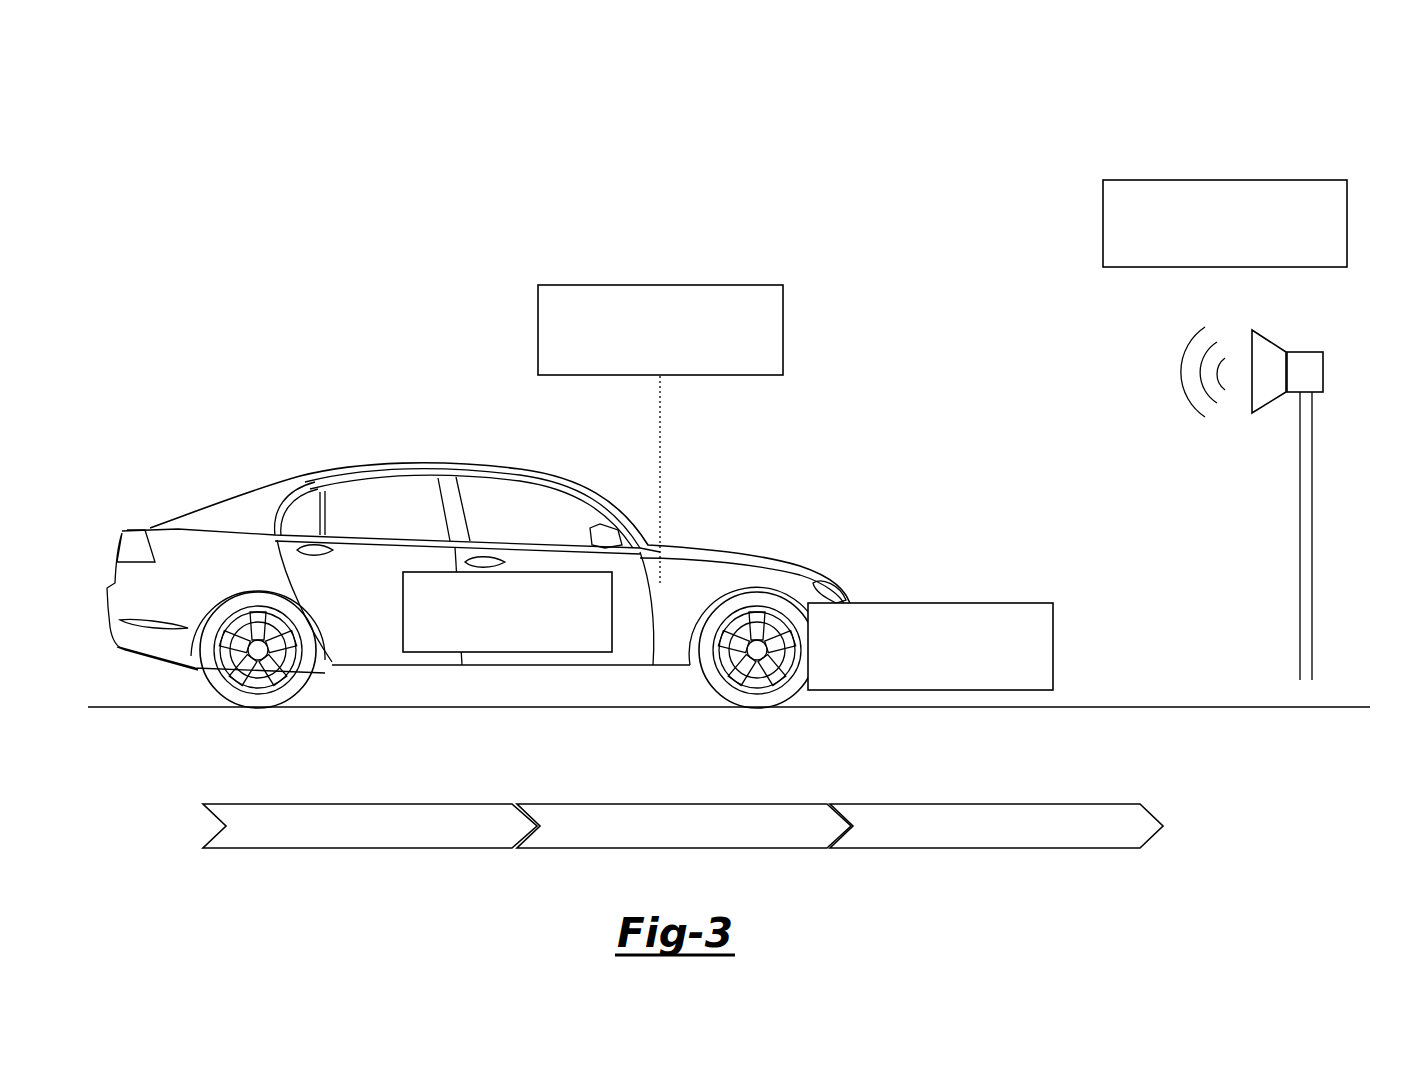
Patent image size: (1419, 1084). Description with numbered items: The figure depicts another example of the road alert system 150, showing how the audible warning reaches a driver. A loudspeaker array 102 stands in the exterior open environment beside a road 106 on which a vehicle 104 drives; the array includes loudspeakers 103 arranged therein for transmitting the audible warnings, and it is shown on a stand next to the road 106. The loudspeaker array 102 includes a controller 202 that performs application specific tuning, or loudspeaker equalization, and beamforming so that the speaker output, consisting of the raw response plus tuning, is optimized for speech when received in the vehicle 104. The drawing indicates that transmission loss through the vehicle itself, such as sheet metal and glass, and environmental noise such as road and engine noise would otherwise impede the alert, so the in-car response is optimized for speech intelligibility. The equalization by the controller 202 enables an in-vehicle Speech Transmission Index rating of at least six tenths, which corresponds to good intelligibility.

The road alert system 150 is at (1213, 97).
The loudspeaker array 102 is at (1309, 352).
The controller 202 is at (1325, 372).
The loudspeakers 103 is at (1384, 454).
The vehicle 104 is at (737, 548).
The road 106 is at (1163, 706).